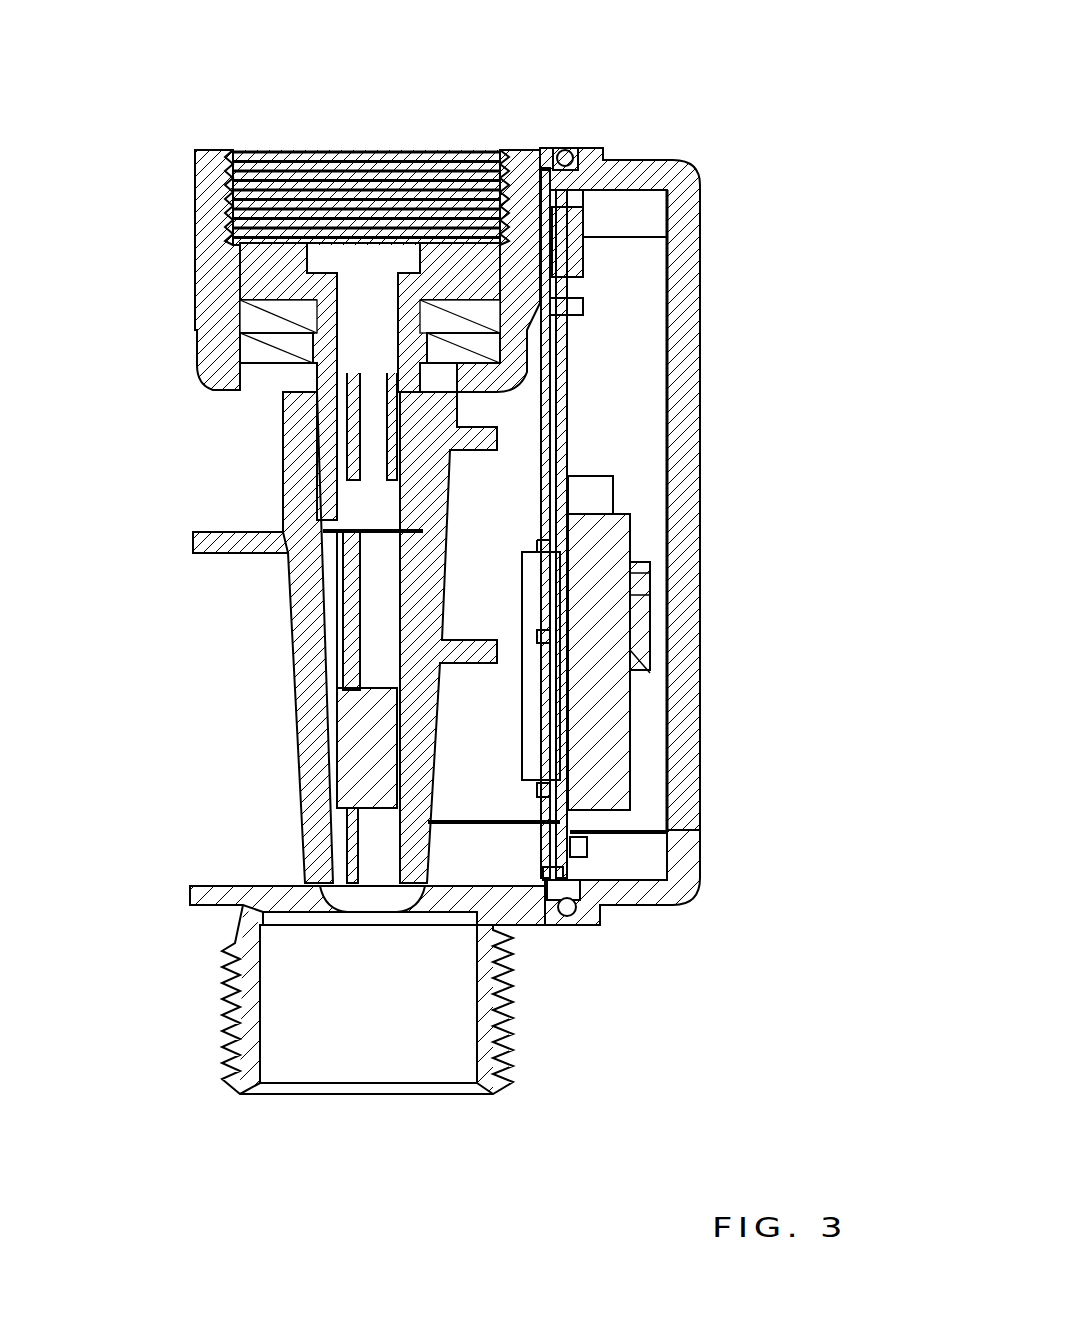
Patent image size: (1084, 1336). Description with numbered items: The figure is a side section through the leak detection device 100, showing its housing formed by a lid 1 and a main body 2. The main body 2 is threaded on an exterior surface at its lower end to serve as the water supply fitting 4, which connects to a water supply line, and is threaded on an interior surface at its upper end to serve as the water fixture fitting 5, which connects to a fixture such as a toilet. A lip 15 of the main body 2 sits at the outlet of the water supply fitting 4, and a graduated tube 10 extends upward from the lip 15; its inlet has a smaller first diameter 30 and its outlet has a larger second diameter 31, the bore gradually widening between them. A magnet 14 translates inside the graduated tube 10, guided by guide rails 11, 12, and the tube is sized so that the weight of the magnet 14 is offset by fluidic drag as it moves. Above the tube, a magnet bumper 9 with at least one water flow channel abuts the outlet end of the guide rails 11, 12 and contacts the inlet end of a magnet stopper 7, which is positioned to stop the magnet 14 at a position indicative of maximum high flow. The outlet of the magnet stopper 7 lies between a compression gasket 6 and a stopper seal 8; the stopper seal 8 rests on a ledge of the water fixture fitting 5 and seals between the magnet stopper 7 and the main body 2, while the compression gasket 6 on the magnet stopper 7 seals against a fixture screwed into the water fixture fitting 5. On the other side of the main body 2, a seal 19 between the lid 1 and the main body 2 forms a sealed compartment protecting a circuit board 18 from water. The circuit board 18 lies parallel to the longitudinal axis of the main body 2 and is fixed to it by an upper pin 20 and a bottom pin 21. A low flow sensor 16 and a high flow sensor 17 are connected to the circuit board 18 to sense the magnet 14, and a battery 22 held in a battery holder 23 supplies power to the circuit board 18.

The lid 1 is at (683, 236).
The main body 2 is at (525, 180).
The water supply fitting 4 is at (250, 993).
The water fixture fitting 5 is at (467, 197).
The compression gasket 6 is at (276, 287).
The magnet stopper 7 is at (277, 318).
The stopper seal 8 is at (263, 357).
The magnet bumper 9 is at (360, 523).
The graduated tube 10 is at (323, 627).
The guide rail 11 is at (350, 572).
The guide rail 12 is at (415, 600).
The magnet 14 is at (362, 778).
The lip 15 is at (390, 890).
The low flow sensor 16 is at (550, 732).
The high flow sensor 17 is at (543, 593).
The circuit board 18 is at (565, 367).
The seal 19 is at (570, 158).
The upper pin 20 is at (573, 311).
The bottom pin 21 is at (585, 847).
The battery 22 is at (583, 488).
The battery holder 23 is at (615, 628).
The first diameter 30 is at (340, 880).
The second diameter 31 is at (317, 540).
The leak detection device 100 is at (763, 430).